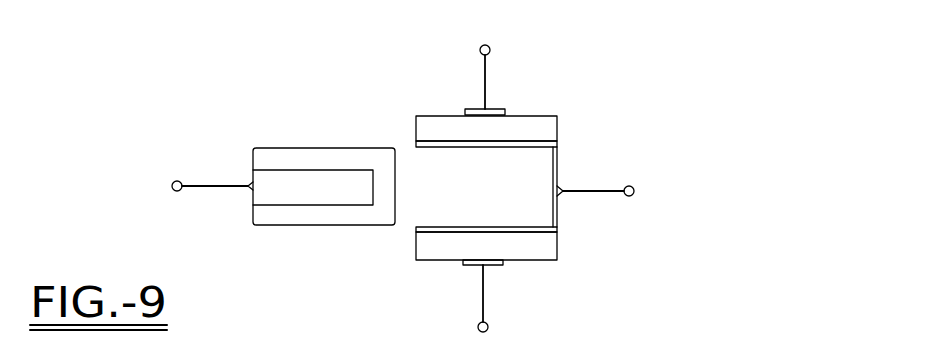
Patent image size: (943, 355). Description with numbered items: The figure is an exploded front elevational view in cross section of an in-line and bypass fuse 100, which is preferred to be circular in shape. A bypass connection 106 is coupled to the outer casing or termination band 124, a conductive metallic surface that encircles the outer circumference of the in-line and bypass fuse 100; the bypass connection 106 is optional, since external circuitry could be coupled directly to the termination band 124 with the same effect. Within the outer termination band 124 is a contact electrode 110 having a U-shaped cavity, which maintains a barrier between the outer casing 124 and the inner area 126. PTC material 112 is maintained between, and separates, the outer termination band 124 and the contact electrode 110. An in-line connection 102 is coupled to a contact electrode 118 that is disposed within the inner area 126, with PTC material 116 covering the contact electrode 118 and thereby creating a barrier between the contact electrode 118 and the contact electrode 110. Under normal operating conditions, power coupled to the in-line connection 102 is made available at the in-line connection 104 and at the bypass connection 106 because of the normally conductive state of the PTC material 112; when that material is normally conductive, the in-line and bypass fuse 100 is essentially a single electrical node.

The in-line and bypass fuse 100 is at (588, 170).
The in-line connection 102 is at (172, 184).
The in-line connection 104 is at (634, 191).
The bypass connection 106 is at (489, 46).
The contact electrode 110 is at (557, 147).
The PTC material 112 is at (556, 127).
The PTC material 116 is at (280, 158).
The contact electrode 118 is at (268, 178).
The outer casing or termination band 124 is at (472, 108).
The inner area 126 is at (494, 204).